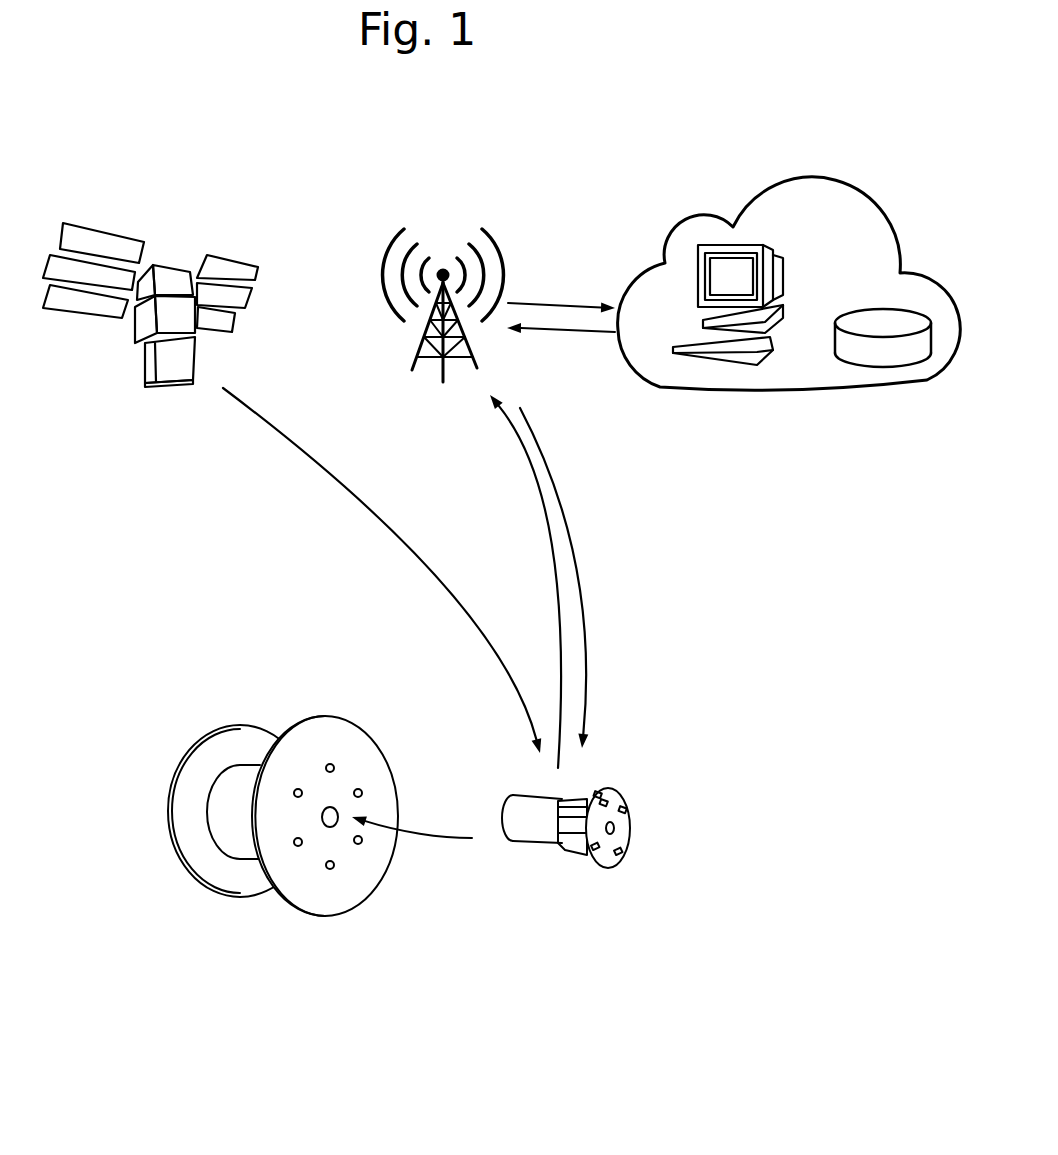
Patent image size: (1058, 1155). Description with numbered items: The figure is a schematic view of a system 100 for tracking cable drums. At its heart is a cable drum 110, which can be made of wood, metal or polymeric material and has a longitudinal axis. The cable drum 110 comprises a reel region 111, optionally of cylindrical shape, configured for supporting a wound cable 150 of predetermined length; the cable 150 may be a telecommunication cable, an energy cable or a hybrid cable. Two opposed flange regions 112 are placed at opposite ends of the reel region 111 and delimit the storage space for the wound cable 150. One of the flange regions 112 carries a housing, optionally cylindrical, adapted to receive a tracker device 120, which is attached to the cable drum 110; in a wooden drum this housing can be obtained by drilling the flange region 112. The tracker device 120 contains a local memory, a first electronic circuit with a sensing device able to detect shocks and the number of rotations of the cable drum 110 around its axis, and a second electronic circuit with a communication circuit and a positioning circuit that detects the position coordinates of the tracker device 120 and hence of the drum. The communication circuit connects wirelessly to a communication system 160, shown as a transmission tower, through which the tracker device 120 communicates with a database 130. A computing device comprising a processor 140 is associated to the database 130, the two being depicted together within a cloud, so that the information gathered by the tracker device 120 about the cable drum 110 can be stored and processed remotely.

The system for tracking cable drums 100 is at (761, 589).
The cable drum 110 is at (286, 677).
The reel region 111 is at (226, 920).
The flange regions 112 is at (293, 893).
The tracker device 120 is at (635, 872).
The database 130 is at (875, 309).
The processor 140 is at (735, 250).
The wound cable 150 is at (225, 822).
The communication system 160 is at (510, 232).